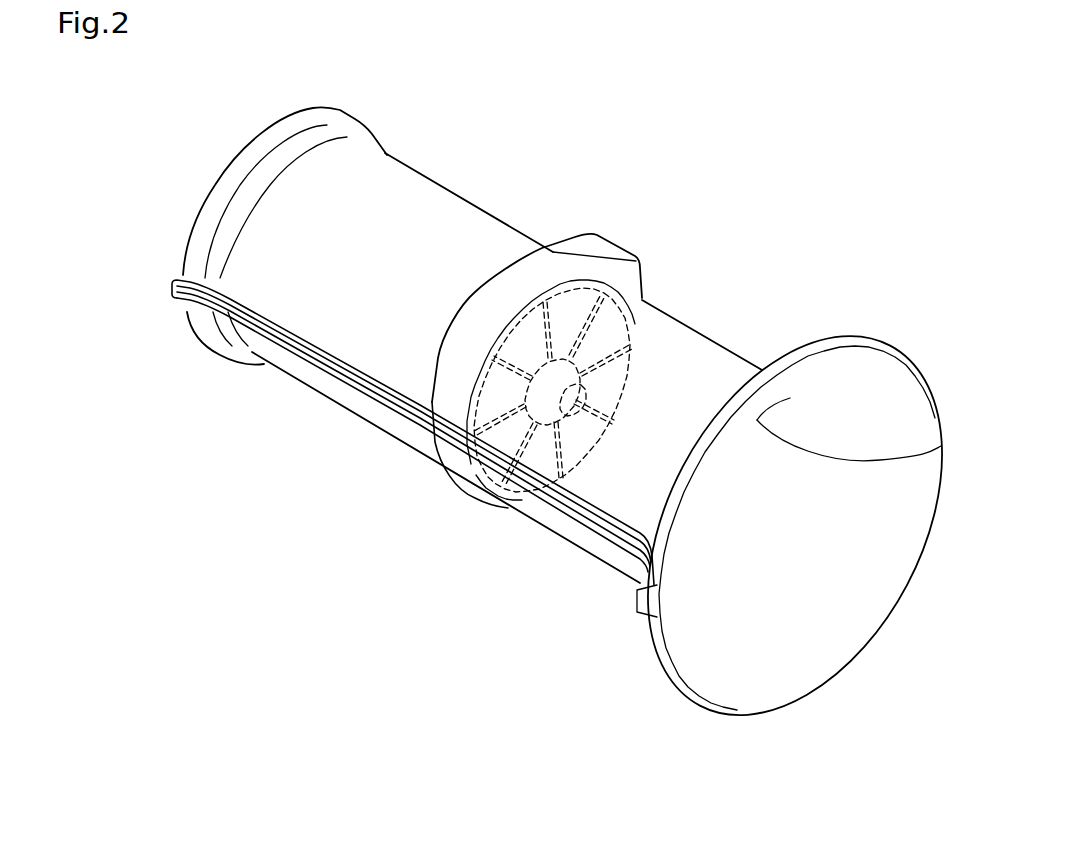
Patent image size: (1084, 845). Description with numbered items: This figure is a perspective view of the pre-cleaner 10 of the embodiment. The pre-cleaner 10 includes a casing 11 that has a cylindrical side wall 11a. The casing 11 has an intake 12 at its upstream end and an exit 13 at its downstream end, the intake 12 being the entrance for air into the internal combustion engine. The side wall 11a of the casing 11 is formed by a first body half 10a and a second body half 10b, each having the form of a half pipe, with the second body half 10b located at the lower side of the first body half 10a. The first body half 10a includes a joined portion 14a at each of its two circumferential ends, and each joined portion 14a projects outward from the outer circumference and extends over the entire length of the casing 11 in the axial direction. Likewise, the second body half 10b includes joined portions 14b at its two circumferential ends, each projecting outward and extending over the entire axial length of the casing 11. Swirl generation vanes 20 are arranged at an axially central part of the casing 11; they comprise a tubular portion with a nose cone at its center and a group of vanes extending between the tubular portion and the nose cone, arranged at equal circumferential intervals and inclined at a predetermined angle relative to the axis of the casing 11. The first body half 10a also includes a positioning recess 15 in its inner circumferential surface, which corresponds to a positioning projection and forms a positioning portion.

The pre-cleaner 10 is at (222, 226).
The first body half 10a is at (172, 268).
The second body half 10b is at (170, 315).
The casing 11 is at (498, 211).
The cylindrical side wall 11a is at (423, 193).
The intake 12 is at (879, 338).
The exit 13 is at (210, 365).
The joined portion 14a is at (347, 369).
The joined portion 14b is at (341, 382).
The positioning recess 15 is at (627, 268).
The swirl generation vanes 20 is at (636, 340).